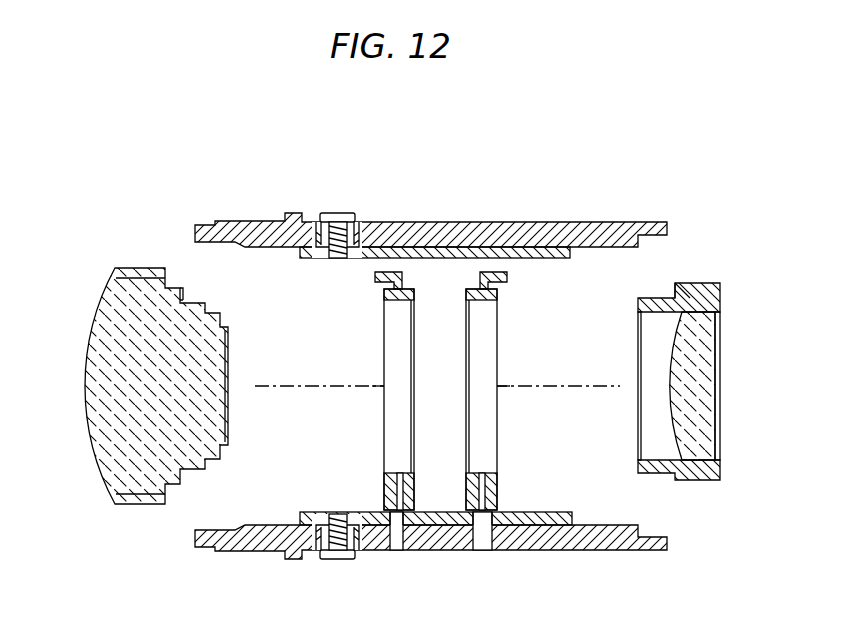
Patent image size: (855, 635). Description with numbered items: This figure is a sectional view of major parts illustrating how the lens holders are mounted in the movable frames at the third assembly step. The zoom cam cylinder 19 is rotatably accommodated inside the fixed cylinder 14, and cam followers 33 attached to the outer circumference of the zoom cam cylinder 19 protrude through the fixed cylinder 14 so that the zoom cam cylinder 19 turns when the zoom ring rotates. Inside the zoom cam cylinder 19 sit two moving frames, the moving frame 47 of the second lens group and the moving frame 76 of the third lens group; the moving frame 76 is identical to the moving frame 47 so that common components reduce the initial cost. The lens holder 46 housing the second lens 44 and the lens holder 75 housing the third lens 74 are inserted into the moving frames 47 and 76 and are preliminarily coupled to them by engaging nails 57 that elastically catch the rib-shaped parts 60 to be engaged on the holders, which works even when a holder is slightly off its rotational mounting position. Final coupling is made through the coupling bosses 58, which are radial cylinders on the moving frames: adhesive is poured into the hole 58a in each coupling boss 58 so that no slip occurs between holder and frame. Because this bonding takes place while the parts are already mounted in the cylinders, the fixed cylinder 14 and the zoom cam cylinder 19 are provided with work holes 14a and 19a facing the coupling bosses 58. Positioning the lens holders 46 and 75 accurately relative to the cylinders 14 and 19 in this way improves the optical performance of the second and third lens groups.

The fixed cylinder 14 is at (605, 222).
The work hole 14a is at (395, 548).
The zoom cam cylinder 19 is at (548, 242).
The work hole 19a is at (408, 511).
The cam follower 33 is at (339, 205).
The second lens 44 is at (86, 386).
The lens holder 46 is at (133, 272).
The moving frame 47 is at (366, 430).
The engaging nail 57 is at (376, 277).
The coupling boss 58 is at (386, 492).
The hole 58a is at (482, 474).
The part to be engaged 60 is at (184, 292).
The third lens 74 is at (713, 388).
The lens holder 75 is at (703, 294).
The moving frame 76 is at (505, 338).